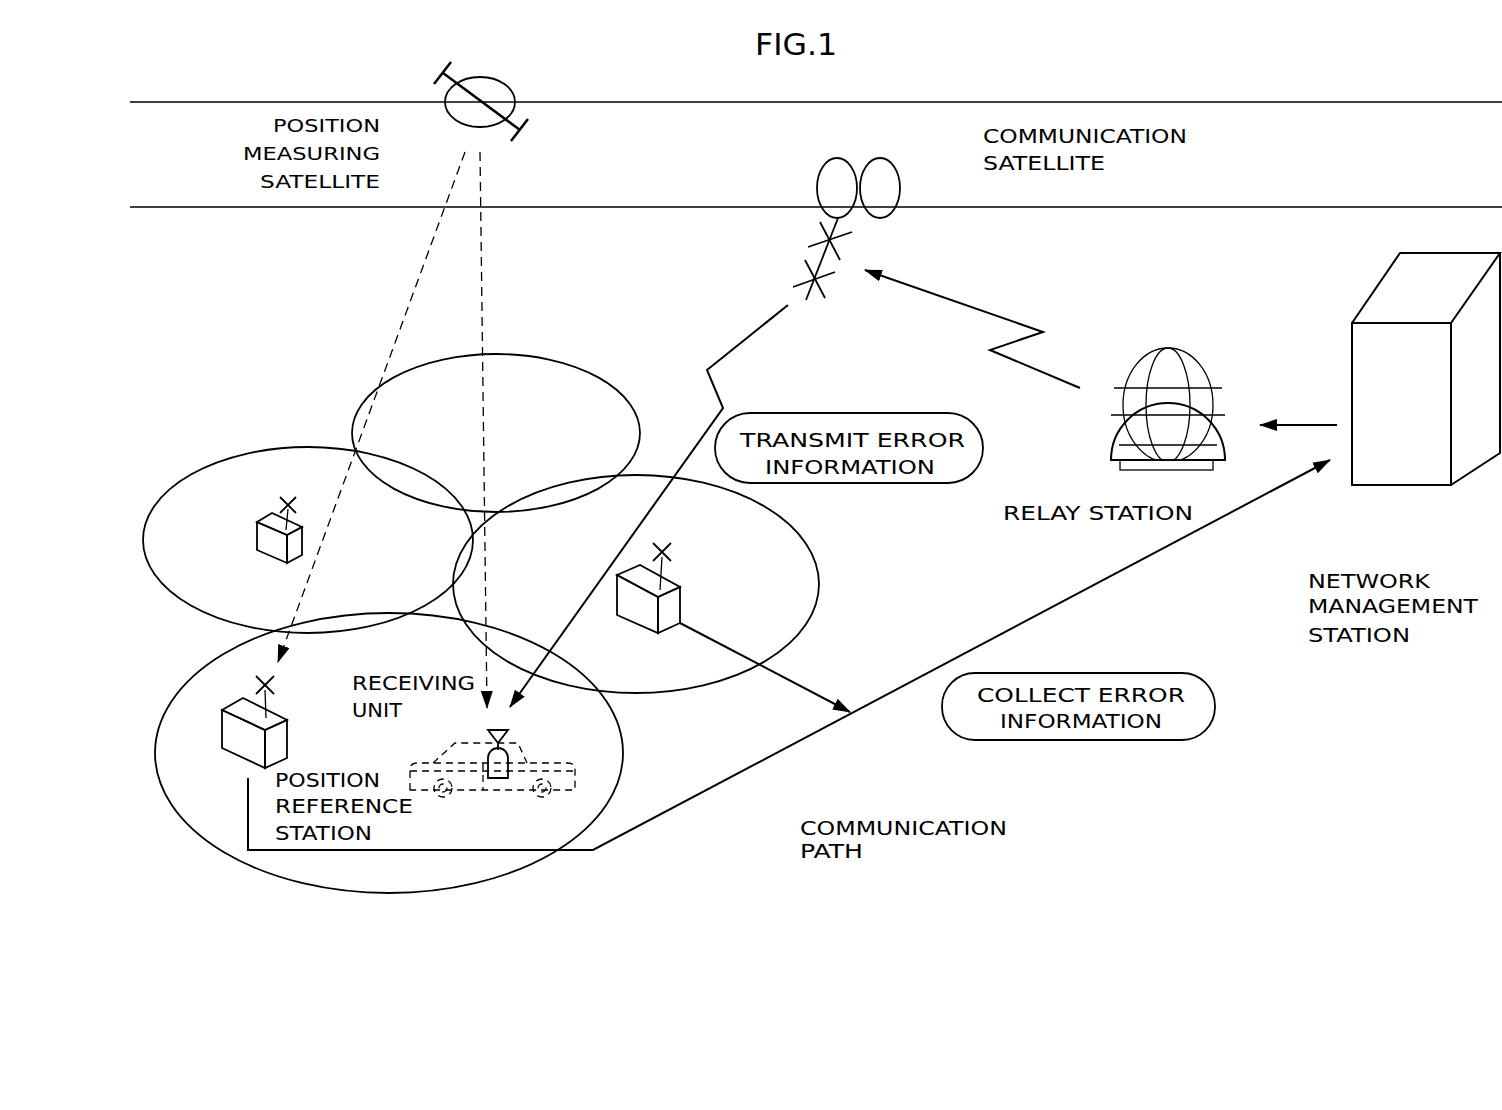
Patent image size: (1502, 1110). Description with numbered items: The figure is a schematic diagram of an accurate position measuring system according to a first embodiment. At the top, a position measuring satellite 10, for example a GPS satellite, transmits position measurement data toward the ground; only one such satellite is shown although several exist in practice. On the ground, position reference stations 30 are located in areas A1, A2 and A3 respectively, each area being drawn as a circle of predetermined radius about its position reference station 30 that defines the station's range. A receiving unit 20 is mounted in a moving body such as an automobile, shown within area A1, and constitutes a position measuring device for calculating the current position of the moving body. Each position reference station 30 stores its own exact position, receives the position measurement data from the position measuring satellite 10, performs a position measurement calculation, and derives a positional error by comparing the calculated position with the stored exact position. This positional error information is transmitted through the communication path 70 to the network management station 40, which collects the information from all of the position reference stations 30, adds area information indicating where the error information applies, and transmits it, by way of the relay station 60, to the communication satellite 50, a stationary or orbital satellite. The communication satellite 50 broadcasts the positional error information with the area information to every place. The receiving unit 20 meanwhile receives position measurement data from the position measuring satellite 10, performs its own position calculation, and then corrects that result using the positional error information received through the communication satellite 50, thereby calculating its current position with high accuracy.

The position measuring satellite 10 is at (457, 112).
The receiving unit 20 is at (500, 765).
The position reference station 30 is at (275, 752).
The network management station 40 is at (1383, 478).
The communication satellite 50 is at (890, 173).
The relay station 60 is at (1108, 430).
The communication path 70 is at (786, 755).
The area A1 is at (483, 867).
The area A2 is at (273, 465).
The area A3 is at (797, 573).